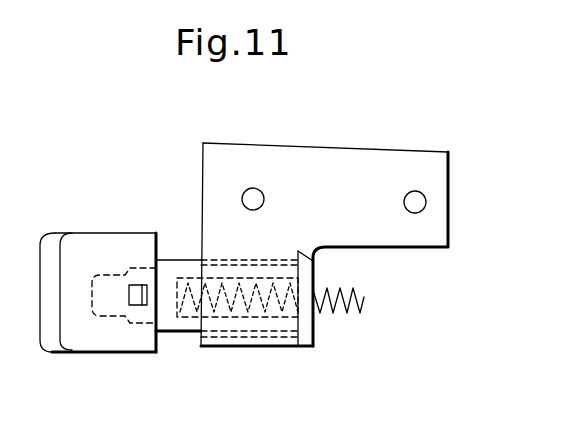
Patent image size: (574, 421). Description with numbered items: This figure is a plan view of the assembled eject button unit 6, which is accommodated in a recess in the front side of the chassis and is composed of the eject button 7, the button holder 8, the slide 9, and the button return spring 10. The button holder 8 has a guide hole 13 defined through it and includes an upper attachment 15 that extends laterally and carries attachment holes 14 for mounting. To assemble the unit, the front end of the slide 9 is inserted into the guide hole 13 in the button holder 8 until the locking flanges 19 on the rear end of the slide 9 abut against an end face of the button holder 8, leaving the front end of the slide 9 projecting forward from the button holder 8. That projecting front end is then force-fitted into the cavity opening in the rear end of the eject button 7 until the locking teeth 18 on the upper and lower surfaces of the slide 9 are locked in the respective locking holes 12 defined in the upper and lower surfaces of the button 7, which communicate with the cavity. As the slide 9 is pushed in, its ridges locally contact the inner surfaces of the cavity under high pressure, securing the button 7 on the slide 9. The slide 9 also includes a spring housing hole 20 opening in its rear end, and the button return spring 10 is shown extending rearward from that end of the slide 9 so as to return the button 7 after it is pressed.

The eject button unit 6 is at (170, 195).
The eject button 7 is at (88, 252).
The button holder 8 is at (350, 160).
The slide 9 is at (180, 322).
The button return spring 10 is at (356, 300).
The locking holes 12 is at (135, 306).
The guide hole 13 is at (242, 338).
The attachment holes 14 is at (251, 190).
The upper attachment 15 is at (305, 160).
The locking teeth 18 is at (148, 292).
The locking flanges 19 is at (313, 263).
The spring housing hole 20 is at (263, 320).